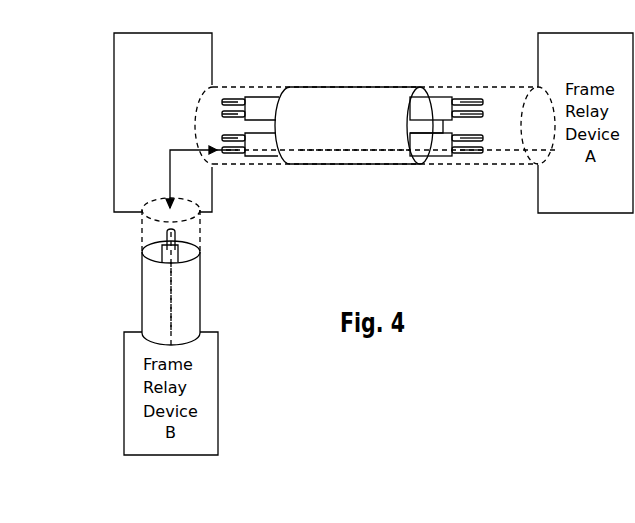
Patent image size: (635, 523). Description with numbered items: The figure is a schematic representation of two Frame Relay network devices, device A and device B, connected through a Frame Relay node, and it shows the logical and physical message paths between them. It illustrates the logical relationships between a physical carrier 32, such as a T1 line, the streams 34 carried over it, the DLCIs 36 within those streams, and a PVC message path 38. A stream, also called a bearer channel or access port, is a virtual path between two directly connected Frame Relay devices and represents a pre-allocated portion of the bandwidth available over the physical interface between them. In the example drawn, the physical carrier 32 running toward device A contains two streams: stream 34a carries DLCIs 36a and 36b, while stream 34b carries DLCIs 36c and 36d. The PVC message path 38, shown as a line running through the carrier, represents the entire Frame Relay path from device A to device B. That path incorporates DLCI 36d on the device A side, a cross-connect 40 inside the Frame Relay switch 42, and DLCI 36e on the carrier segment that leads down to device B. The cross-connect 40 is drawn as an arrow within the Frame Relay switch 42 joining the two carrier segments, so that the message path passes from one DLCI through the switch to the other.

The physical carrier 32 is at (348, 87).
The streams 34 is at (270, 97).
The DLCIs 36 is at (233, 98).
The PVC message path 38 is at (337, 152).
The cross-connect 40 is at (170, 168).
The Frame Relay switch 42 is at (113, 83).
The stream 34a is at (446, 97).
The stream 34b is at (436, 160).
The DLCI 36a is at (484, 99).
The DLCI 36b is at (487, 115).
The DLCI 36c is at (492, 153).
The DLCI 36d is at (467, 154).
The DLCI 36e is at (183, 243).